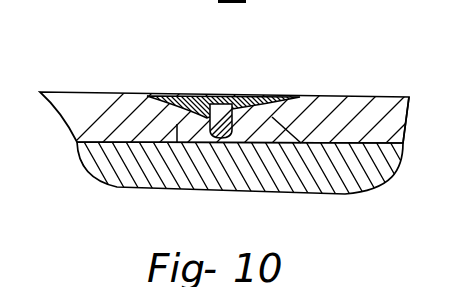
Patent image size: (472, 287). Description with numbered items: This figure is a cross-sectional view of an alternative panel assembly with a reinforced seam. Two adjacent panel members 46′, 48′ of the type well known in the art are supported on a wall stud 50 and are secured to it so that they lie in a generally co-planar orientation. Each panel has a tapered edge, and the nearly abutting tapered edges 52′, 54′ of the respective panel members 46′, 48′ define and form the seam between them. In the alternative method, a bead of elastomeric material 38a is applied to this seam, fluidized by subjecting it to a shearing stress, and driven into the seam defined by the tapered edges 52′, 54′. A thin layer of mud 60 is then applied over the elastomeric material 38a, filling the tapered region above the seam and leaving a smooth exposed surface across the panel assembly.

The elastomeric material 38a is at (240, 95).
The panel member 46′ is at (77, 123).
The panel member 48′ is at (405, 143).
The wall stud 50 is at (133, 176).
The tapered edge 52′ is at (177, 124).
The tapered edge 54′ is at (272, 117).
The mud 60 is at (190, 95).